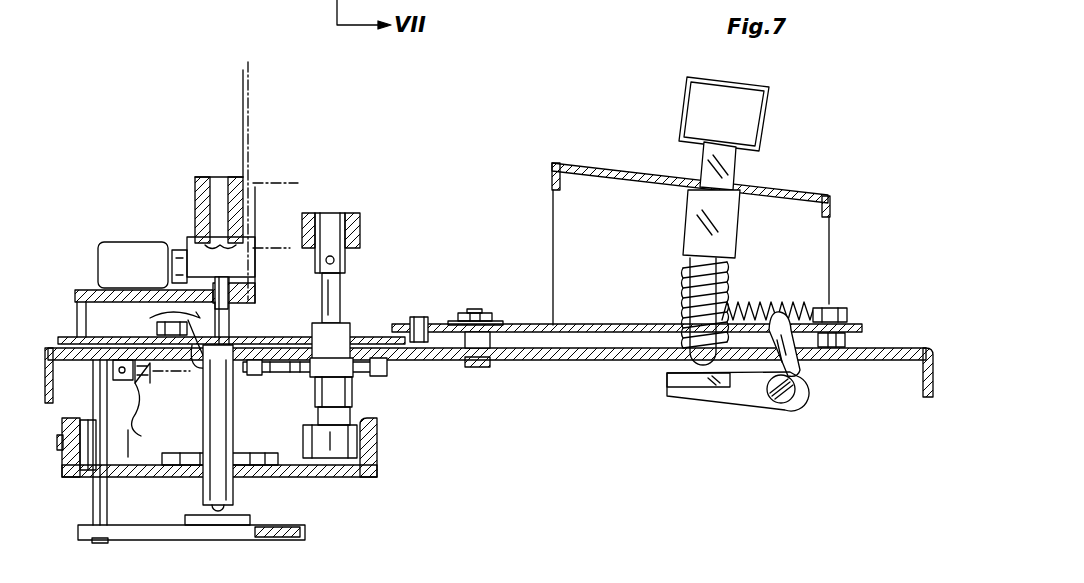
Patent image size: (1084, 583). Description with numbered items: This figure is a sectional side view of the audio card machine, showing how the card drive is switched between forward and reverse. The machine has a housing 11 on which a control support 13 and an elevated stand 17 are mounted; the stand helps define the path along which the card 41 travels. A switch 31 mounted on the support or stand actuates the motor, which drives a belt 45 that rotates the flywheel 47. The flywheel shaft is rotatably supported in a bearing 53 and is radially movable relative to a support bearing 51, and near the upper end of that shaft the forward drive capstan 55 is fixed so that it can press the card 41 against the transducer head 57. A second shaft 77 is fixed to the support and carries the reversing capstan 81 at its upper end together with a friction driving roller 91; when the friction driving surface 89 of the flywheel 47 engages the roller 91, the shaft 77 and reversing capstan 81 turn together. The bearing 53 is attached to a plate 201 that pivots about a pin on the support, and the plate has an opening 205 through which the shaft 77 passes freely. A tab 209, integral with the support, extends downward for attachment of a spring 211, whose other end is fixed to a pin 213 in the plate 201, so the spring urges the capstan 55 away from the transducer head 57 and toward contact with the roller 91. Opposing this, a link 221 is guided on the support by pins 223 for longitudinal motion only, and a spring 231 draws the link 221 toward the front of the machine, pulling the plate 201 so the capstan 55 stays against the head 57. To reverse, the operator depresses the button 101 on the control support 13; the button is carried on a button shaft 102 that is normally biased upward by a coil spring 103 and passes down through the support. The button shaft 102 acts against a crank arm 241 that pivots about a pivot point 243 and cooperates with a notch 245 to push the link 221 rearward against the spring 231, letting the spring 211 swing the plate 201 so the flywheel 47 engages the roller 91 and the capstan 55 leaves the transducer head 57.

The housing 11 is at (890, 350).
The control support 13 is at (622, 150).
The stand 17 is at (134, 274).
The switch 31 is at (130, 243).
The card 41 is at (250, 98).
The belt 45 is at (62, 442).
The flywheel 47 is at (376, 438).
The support bearing 51 is at (255, 518).
The bearing 53 is at (152, 318).
The forward drive capstan 55 is at (195, 190).
The transducer head 57 is at (270, 187).
The shaft 77 is at (341, 290).
The reversing capstan 81 is at (362, 224).
The friction driving surface 89 is at (96, 432).
The friction driving roller 91 is at (343, 448).
The button 101 is at (703, 92).
The lever 102 is at (703, 203).
The coil spring 103 is at (684, 275).
The plate 201 is at (60, 337).
The opening 205 is at (362, 343).
The tab 209 is at (203, 424).
The spring 211 is at (150, 372).
The pin 213 is at (250, 378).
The link 221 is at (533, 327).
The pins 223 is at (470, 366).
The spring 231 is at (750, 305).
The crank arm 241 is at (700, 392).
The pivot point 243 is at (782, 408).
The notch 245 is at (797, 368).